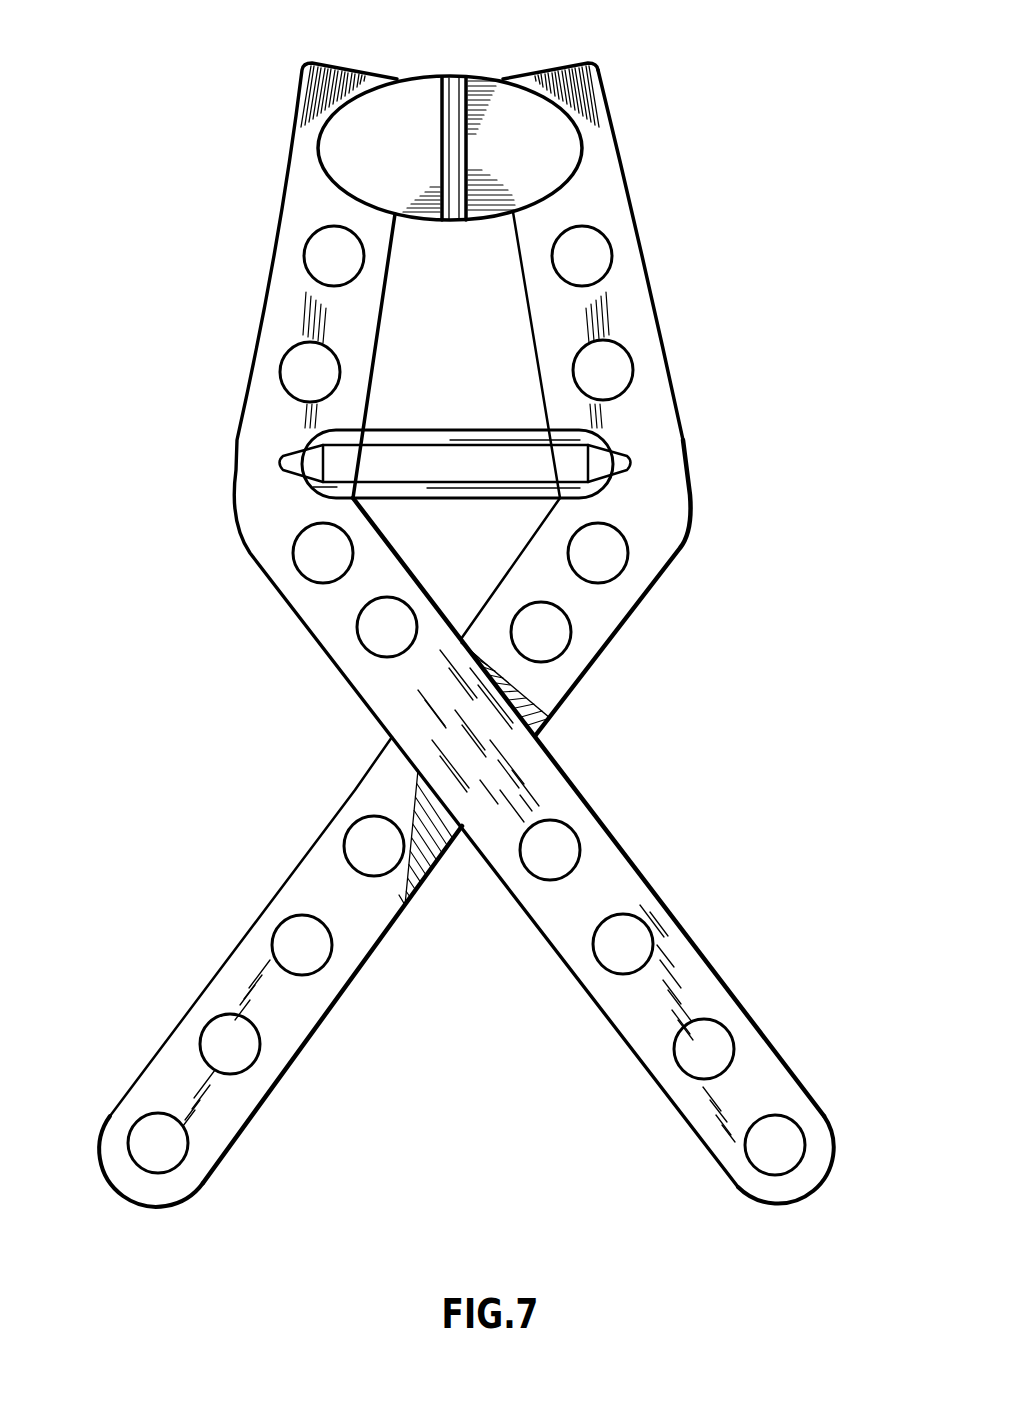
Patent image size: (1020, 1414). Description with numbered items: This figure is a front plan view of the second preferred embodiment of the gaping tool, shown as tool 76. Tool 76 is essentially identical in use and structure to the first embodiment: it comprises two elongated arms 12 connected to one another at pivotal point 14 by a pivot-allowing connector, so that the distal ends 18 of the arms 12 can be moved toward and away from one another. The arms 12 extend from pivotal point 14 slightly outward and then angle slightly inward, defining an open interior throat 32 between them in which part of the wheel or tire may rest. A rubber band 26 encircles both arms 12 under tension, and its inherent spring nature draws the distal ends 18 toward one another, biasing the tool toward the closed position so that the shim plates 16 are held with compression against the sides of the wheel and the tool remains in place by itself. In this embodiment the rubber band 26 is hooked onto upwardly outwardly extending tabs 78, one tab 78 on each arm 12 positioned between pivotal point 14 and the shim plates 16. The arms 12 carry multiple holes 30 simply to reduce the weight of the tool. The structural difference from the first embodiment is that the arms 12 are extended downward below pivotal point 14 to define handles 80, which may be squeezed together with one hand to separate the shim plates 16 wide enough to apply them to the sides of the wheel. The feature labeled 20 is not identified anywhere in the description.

The elongated arms 12 is at (663, 350).
The pivotal point 14 is at (463, 732).
The shim plates 16 is at (463, 77).
The distal ends 18 is at (355, 65).
The elliptical recess 20 is at (338, 145).
The rubber band 26 is at (447, 430).
The holes 30 is at (298, 935).
The open interior throat 32 is at (422, 298).
The tool 76 is at (661, 277).
The tabs 78 is at (617, 463).
The handles 80 is at (623, 1043).